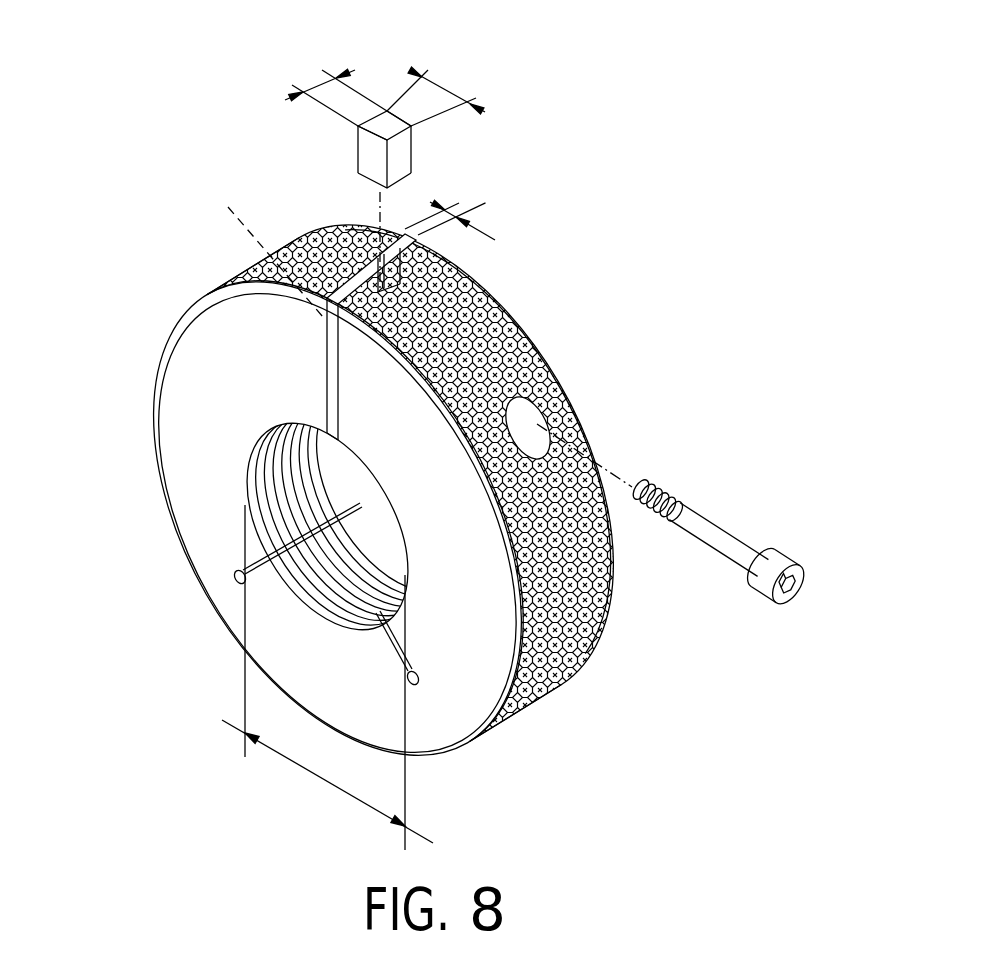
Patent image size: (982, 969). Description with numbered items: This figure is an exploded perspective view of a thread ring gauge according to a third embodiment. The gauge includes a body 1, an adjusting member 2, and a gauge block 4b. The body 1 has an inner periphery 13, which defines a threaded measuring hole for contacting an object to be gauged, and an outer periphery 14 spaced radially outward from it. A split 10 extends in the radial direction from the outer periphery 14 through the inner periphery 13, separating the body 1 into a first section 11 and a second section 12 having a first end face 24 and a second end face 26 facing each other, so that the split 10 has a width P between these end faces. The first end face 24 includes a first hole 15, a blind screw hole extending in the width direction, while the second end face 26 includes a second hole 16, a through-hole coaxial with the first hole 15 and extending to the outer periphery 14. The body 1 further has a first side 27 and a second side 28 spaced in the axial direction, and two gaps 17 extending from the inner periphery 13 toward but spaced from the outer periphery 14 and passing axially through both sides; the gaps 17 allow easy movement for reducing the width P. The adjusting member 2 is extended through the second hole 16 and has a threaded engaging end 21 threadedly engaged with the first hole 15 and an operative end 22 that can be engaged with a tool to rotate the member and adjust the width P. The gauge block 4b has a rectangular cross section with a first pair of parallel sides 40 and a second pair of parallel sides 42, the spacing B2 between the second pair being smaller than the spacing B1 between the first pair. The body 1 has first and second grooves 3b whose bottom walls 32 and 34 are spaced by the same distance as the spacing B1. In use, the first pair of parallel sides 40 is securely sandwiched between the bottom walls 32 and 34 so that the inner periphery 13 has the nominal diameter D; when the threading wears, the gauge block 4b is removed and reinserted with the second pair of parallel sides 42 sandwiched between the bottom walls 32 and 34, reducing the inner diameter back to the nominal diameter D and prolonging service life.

The body 1 is at (190, 258).
The adjusting member 2 is at (732, 503).
The split 10 is at (318, 357).
The first section 11 is at (193, 347).
The second section 12 is at (473, 607).
The inner periphery 13 is at (327, 587).
The outer periphery 14 is at (547, 690).
The first hole 15 is at (261, 246).
The second hole 16 is at (533, 415).
The gaps 17 is at (205, 572).
The threaded engaging end 21 is at (668, 480).
The operative end 22 is at (772, 560).
The first end face 24 is at (338, 405).
The second end face 26 is at (325, 420).
The first side 27 is at (245, 545).
The second side 28 is at (545, 355).
The bottom wall of first groove 32 is at (303, 242).
The bottom wall of second groove 34 is at (445, 255).
The first and second grooves 3b is at (322, 226).
The first pair of parallel sides 40 is at (378, 122).
The second pair of parallel sides 42 is at (393, 126).
The gauge block 4b is at (400, 118).
The spacing between first pair of parallel sides B1 is at (436, 91).
The spacing between second pair of parallel sides B2 is at (336, 91).
The nominal diameter D is at (327, 677).
The width of split P is at (451, 215).